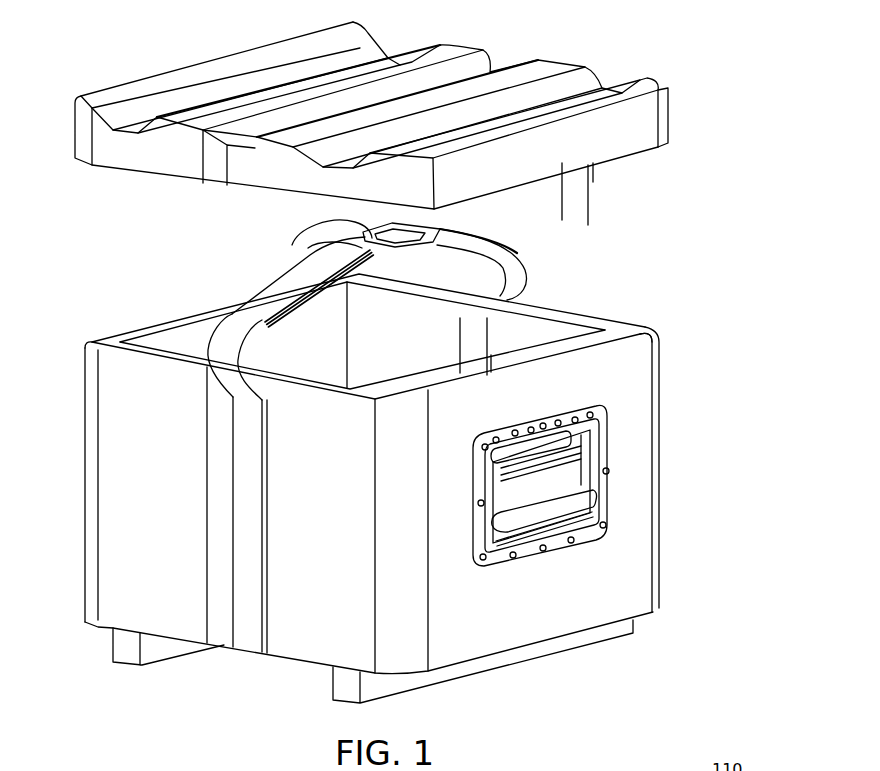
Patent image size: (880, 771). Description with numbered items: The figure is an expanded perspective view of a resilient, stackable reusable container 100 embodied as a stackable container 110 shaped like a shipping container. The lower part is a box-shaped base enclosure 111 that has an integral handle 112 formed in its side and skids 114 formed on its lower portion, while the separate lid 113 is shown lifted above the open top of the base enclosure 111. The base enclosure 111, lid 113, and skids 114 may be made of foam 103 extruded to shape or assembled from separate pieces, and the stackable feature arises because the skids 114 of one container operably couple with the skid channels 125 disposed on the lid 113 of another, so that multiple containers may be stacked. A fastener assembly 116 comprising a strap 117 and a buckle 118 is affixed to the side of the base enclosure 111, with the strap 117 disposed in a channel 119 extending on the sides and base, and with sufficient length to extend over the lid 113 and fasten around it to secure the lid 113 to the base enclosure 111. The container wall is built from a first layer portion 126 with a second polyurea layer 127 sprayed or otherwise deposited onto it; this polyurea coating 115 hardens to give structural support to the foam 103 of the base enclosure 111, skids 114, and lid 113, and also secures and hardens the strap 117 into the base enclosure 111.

The reusable container 100 is at (635, 720).
The foam 103 is at (624, 321).
The stackable container 110 is at (733, 235).
The base enclosure 111 is at (640, 400).
The integral handle 112 is at (605, 497).
The lid 113 is at (442, 55).
The skids 114 is at (118, 660).
The polyurea coating 115 is at (620, 152).
The fastener assembly 116 is at (421, 294).
The strap 117 is at (527, 282).
The buckle 118 is at (300, 246).
The channel 119 is at (245, 158).
The skid channels 125 is at (143, 117).
The first layer portion 126 is at (618, 200).
The second polyurea layer 127 is at (625, 177).